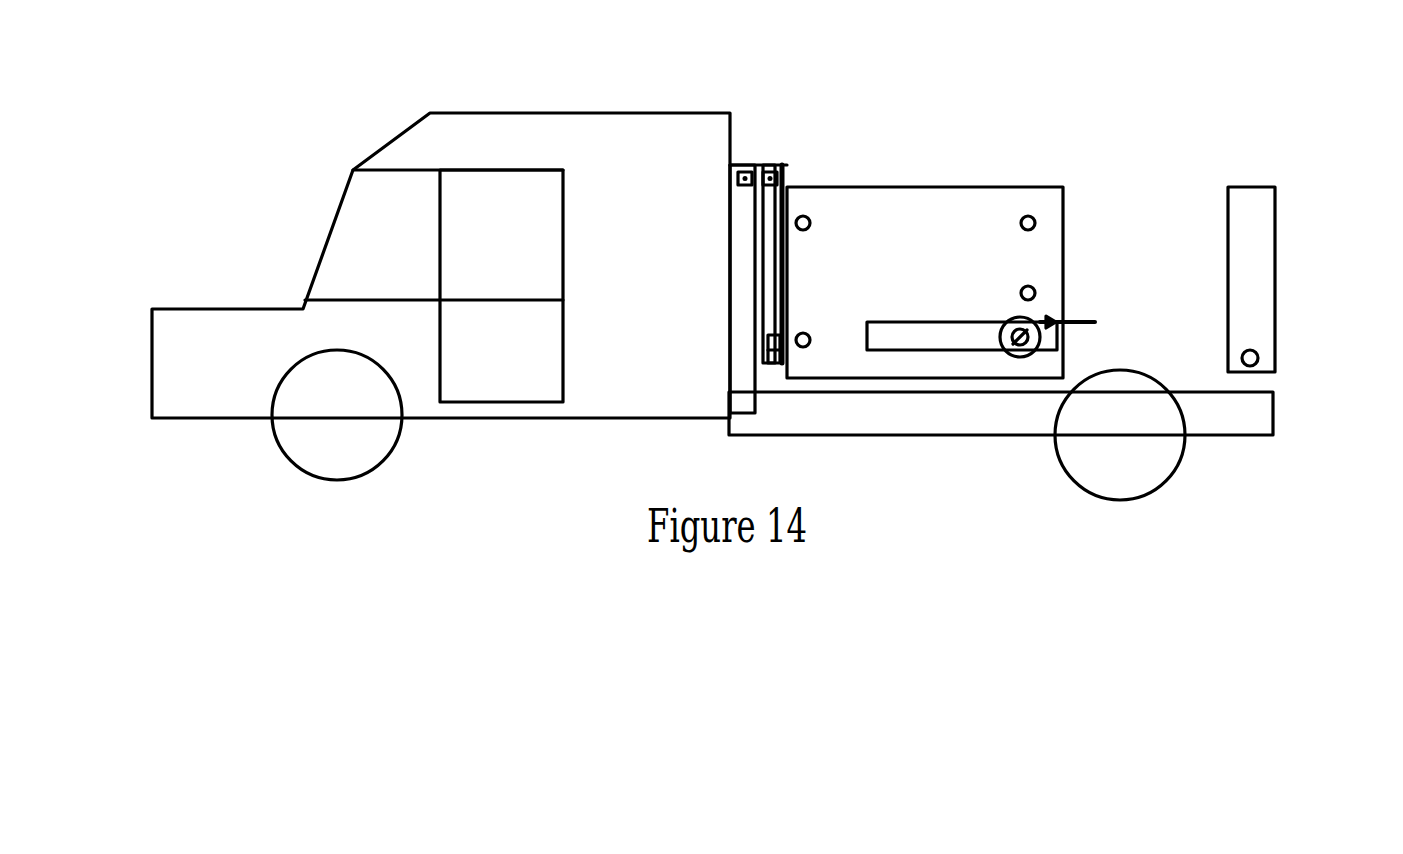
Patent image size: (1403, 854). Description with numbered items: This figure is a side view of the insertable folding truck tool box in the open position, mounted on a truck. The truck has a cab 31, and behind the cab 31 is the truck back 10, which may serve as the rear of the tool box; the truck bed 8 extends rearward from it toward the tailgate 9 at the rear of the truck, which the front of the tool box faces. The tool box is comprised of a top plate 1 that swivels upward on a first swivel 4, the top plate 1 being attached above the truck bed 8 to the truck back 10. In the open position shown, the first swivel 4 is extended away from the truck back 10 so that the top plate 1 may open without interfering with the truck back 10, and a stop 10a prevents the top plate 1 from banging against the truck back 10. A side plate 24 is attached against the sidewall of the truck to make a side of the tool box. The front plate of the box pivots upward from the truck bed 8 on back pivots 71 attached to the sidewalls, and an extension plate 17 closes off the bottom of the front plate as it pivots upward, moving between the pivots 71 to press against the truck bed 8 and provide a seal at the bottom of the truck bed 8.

The top plate 1 is at (790, 258).
The first swivel 4 is at (782, 168).
The truck bed 8 is at (1190, 392).
The tailgate 9 is at (1253, 228).
The truck back 10 is at (790, 213).
The stop 10a is at (763, 363).
The extension plate 17 is at (1085, 322).
The side plate 24 is at (938, 203).
The cab 31 is at (612, 331).
The back pivot 71 is at (1043, 318).